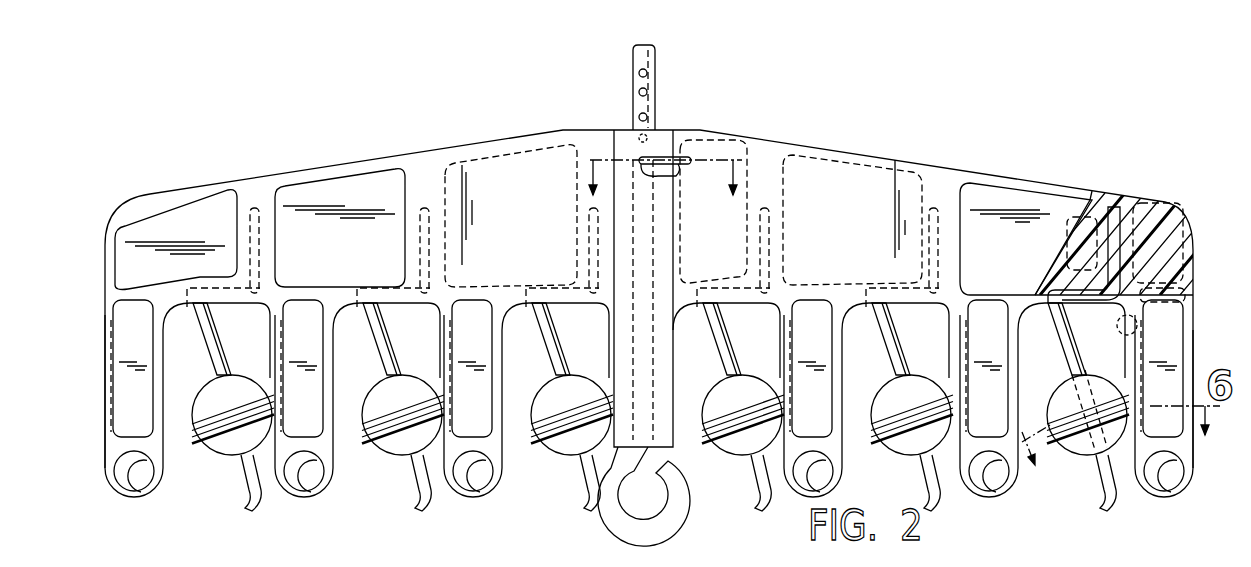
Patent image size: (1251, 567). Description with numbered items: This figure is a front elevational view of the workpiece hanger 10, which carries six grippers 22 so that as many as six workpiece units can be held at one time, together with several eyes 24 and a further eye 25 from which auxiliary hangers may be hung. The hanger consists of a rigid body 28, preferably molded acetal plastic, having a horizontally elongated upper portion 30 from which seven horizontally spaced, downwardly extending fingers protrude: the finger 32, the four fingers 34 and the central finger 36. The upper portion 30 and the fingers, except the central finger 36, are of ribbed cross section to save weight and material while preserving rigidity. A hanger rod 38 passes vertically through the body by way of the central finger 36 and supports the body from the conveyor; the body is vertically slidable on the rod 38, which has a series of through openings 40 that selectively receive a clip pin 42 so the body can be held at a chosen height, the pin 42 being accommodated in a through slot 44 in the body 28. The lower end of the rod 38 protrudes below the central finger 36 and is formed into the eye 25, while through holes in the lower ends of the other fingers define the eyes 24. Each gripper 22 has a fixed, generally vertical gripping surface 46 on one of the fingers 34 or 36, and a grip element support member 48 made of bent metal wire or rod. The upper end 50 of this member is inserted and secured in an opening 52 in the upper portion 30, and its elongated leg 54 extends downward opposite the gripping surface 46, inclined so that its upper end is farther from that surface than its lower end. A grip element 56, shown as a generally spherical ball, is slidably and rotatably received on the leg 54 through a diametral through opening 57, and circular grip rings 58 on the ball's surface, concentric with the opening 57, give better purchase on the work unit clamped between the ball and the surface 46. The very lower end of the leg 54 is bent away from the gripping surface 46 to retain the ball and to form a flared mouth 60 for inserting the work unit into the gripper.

The hanger 10 is at (983, 172).
The grippers 22 is at (646, 365).
The eyes 24 is at (150, 468).
The eye 25 is at (673, 468).
The body 28 is at (925, 178).
The upper portion 30 is at (862, 175).
The finger 32 is at (165, 338).
The fingers 34 is at (758, 416).
The central finger 36 is at (674, 338).
The hanger rod 38 is at (632, 65).
The through openings 40 is at (650, 90).
The clip pin 42 is at (644, 166).
The through slot 44 is at (678, 168).
The gripping surface 46 is at (1170, 300).
The grip element support member 48 is at (1130, 228).
The upper end 50 is at (1128, 252).
The opening 52 is at (1117, 205).
The leg 54 is at (1103, 474).
The grip element 56 is at (1082, 447).
The diametral through opening 57 is at (1085, 455).
The grip rings 58 is at (1090, 378).
The flared mouth 60 is at (1126, 480).